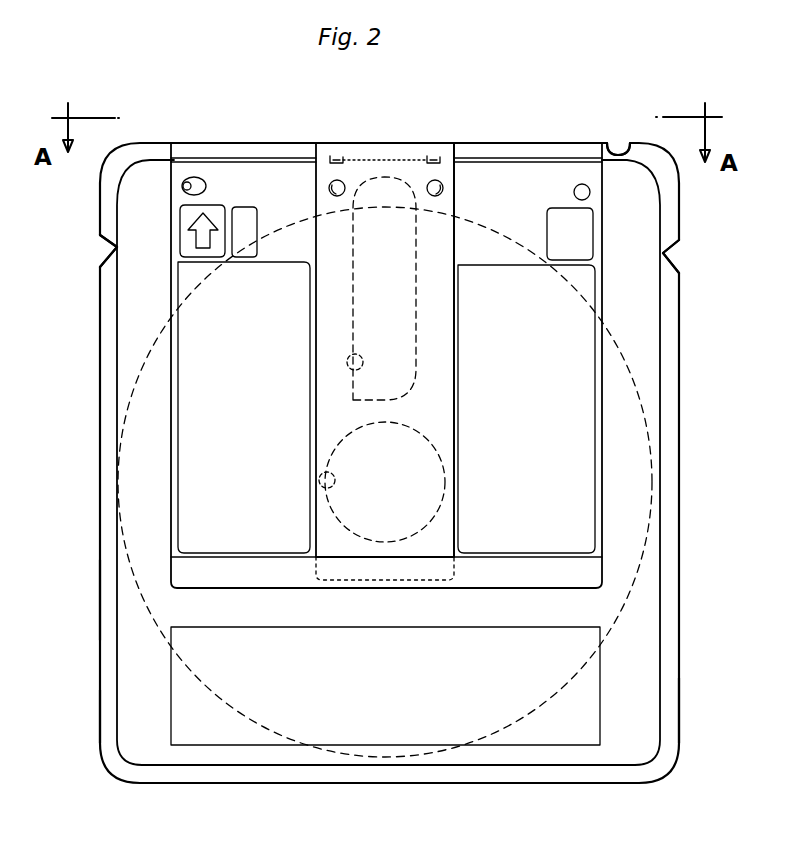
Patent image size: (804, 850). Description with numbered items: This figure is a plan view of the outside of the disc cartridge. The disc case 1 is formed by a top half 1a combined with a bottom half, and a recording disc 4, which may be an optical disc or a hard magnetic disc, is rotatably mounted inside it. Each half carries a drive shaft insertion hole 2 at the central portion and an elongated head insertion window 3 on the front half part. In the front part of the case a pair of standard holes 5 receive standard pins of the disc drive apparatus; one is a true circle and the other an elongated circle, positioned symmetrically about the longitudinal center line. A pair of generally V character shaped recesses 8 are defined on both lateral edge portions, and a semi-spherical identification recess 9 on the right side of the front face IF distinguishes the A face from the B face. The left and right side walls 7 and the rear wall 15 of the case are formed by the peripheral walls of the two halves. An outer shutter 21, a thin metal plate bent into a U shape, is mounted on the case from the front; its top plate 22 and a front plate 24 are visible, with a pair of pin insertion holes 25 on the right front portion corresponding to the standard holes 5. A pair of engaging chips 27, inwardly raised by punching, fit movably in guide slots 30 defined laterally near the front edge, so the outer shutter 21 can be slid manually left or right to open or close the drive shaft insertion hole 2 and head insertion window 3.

The disc case 1 is at (95, 396).
The top half 1a is at (100, 588).
The drive shaft insertion hole 2 is at (319, 505).
The head insertion window 3 is at (356, 374).
The recording disc 4 is at (149, 610).
The standard holes 5 is at (183, 186).
The side walls 7 is at (97, 690).
The V character shaped recesses 8 is at (104, 258).
The identification recess 9 is at (618, 148).
The rear wall 15 is at (246, 784).
The outer shutter 21 is at (395, 138).
The top plate 22 is at (464, 356).
The front plate 24 is at (453, 143).
The pin insertion holes 25 is at (329, 190).
The engaging chips 27 is at (334, 163).
The guide slots 30 is at (258, 143).
The front face IF is at (523, 145).